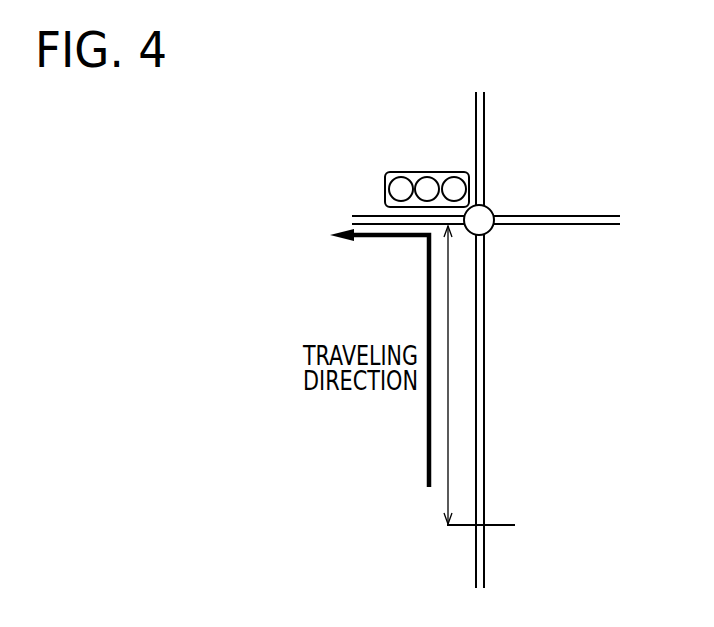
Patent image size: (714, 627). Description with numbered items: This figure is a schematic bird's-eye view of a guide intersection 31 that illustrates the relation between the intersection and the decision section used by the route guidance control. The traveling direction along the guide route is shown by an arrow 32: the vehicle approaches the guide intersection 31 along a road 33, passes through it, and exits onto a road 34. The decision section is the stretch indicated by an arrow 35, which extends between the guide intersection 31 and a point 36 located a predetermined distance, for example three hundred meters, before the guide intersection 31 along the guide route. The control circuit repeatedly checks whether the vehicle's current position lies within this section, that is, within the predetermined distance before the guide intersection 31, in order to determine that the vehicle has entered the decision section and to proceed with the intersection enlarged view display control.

The guide intersection 31 is at (494, 206).
The arrow 32 is at (389, 239).
The road 33 is at (483, 401).
The road 34 is at (375, 216).
The arrow 35 is at (449, 352).
The point 36 is at (483, 527).